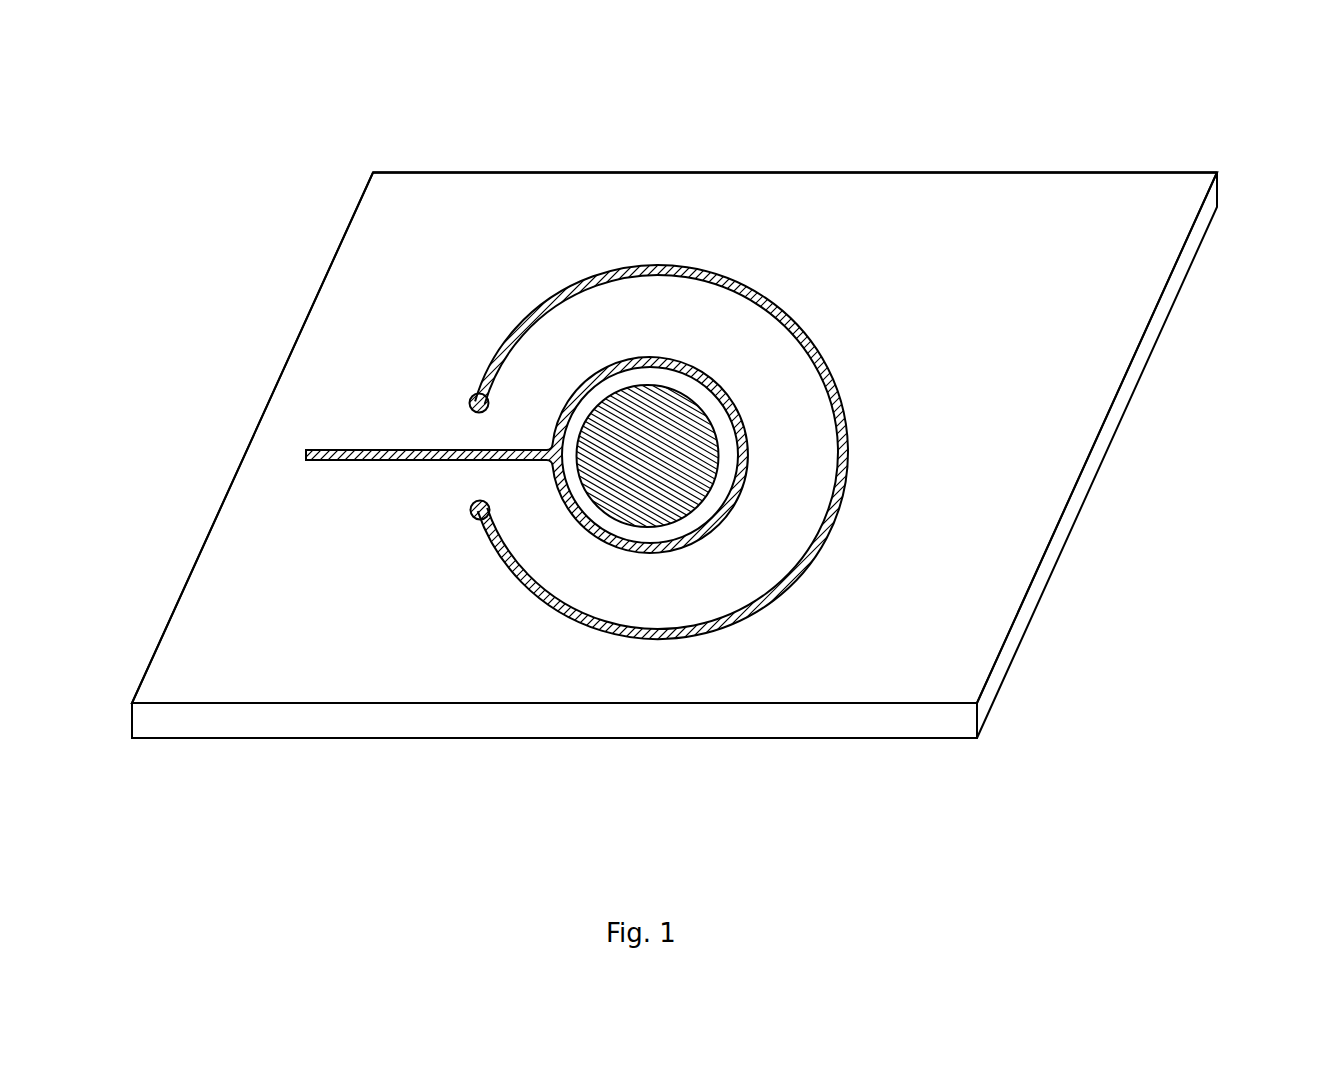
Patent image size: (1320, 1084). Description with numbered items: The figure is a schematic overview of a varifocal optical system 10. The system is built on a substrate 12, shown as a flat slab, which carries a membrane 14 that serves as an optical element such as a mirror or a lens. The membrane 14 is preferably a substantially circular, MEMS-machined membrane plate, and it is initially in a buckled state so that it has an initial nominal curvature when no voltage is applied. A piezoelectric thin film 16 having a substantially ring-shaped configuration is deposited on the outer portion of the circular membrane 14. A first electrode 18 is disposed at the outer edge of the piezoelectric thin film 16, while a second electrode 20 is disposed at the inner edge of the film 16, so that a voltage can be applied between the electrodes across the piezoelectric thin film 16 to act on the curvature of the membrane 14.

The varifocal optical system 10 is at (729, 791).
The substrate 12 is at (1059, 437).
The membrane 14 is at (657, 437).
The piezoelectric thin film 16 is at (622, 578).
The first electrode 18 is at (720, 273).
The second electrode 20 is at (557, 495).